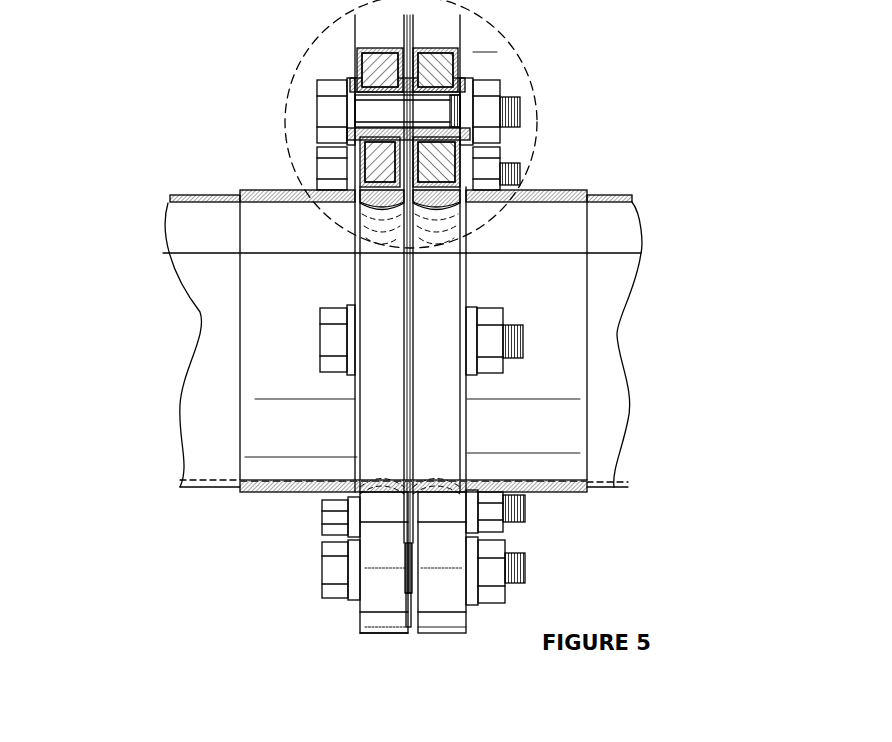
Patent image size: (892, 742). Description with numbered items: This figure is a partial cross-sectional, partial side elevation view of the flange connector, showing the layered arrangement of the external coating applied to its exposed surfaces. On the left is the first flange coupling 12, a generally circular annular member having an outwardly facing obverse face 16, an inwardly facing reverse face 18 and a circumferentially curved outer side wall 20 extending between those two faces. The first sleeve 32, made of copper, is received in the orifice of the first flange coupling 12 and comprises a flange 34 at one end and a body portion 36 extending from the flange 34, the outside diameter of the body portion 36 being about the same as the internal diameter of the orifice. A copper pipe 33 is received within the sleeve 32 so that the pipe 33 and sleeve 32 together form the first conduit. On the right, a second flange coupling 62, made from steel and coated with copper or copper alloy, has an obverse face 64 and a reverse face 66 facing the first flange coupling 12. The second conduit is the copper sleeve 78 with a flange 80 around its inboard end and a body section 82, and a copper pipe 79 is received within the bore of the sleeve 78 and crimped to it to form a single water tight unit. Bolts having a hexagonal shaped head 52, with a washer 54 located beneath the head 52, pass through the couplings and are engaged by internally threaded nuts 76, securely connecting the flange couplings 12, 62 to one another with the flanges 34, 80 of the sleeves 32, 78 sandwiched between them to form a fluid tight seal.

The first flange coupling 12 is at (373, 637).
The obverse face 16 is at (357, 620).
The reverse face 18 is at (412, 628).
The outer side wall 20 is at (382, 628).
The first sleeve 32 is at (280, 373).
The pipe 33 is at (197, 197).
The flange 34 is at (405, 502).
The body portion 36 is at (275, 478).
The hexagonal shaped head 52 is at (322, 566).
The washer 54 is at (348, 600).
The second flange coupling 62 is at (453, 640).
The obverse face 64 is at (467, 620).
The reverse face 66 is at (413, 620).
The internally threaded nut 76 is at (508, 592).
The second sleeve 78 is at (590, 337).
The pipe 79 is at (610, 192).
The flange 80 is at (405, 502).
The body section 82 is at (573, 477).